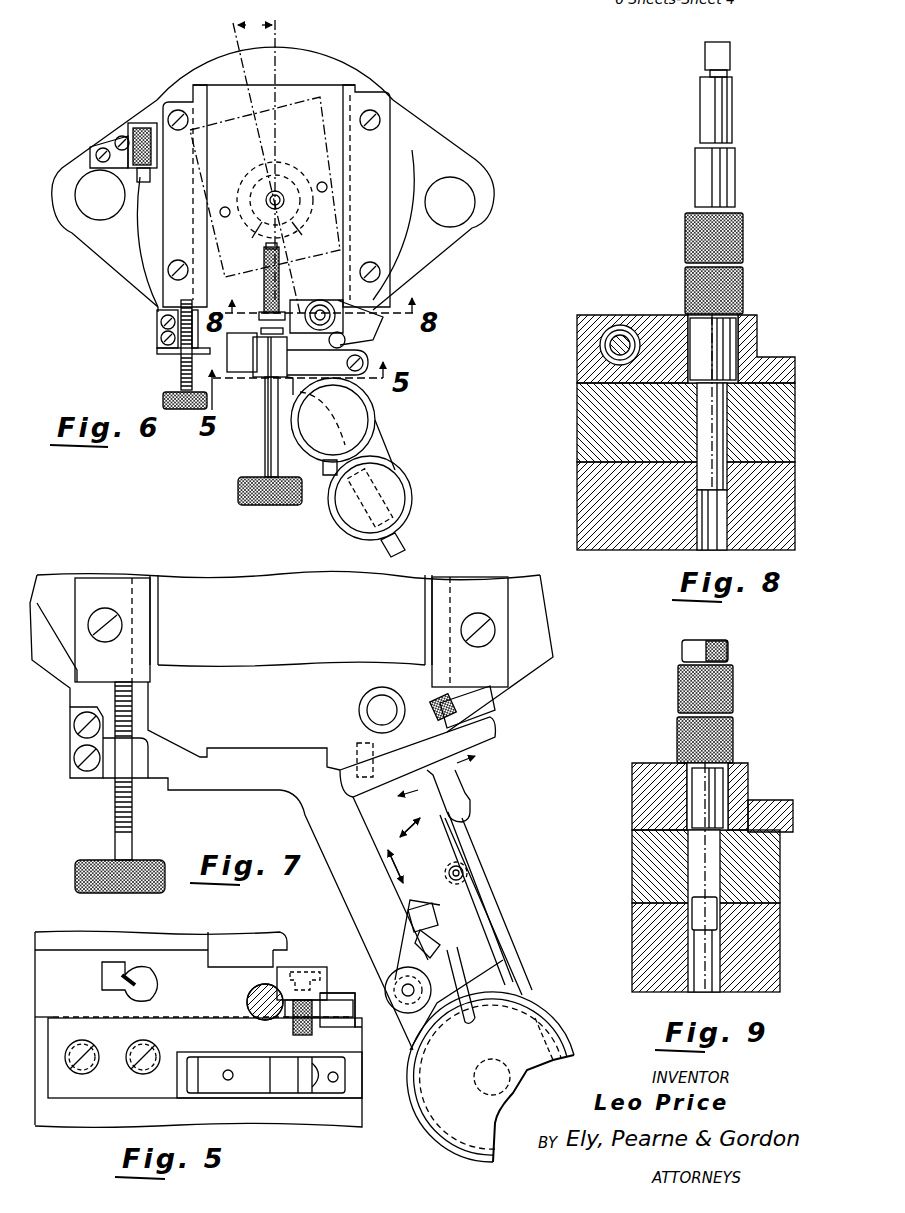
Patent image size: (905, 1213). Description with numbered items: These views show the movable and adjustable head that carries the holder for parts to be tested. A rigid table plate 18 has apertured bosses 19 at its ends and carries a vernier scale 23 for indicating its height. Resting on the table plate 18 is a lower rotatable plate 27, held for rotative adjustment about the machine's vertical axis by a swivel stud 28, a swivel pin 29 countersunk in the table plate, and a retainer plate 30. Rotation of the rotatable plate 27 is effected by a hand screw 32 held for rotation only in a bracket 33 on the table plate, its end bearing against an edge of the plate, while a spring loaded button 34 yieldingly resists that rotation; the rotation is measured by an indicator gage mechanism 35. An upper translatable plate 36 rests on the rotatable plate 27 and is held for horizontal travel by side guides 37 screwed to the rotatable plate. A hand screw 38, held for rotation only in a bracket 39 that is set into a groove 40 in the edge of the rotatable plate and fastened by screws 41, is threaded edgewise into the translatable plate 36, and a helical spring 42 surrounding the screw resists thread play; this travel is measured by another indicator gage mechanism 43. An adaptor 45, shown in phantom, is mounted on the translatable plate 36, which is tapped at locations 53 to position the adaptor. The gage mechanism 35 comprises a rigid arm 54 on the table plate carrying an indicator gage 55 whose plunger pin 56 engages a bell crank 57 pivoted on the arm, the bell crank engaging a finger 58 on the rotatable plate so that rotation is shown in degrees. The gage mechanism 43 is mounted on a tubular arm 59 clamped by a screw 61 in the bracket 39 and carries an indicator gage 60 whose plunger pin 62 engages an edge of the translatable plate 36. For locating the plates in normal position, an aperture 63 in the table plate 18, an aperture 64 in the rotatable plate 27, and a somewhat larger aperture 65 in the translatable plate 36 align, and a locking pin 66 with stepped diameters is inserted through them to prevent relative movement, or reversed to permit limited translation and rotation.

In FIG. 6, the table plate 18 is at (118, 258).
In FIG. 8, the table plate 18 is at (578, 478).
In FIG. 9, the table plate 18 is at (636, 950).
In FIG. 7, the table plate 18 is at (210, 775).
In FIG. 5, the table plate 18 is at (325, 1125).
In FIG. 6, the apertured bosses 19 is at (72, 165).
In FIG. 6, the vernier scale 23 is at (156, 351).
In FIG. 6, the rotatable plate 27 is at (152, 262).
In FIG. 8, the rotatable plate 27 is at (578, 420).
In FIG. 9, the rotatable plate 27 is at (635, 855).
In FIG. 7, the rotatable plate 27 is at (198, 680).
In FIG. 5, the rotatable plate 27 is at (353, 1095).
In FIG. 6, the swivel stud 28 is at (313, 235).
In FIG. 6, the swivel pin 29 is at (243, 239).
In FIG. 6, the retainer plate 30 is at (246, 184).
In FIG. 6, the hand screw 32 is at (180, 378).
In FIG. 7, the hand screw 32 is at (133, 812).
In FIG. 6, the bracket 33 is at (156, 333).
In FIG. 7, the bracket 33 is at (70, 765).
In FIG. 6, the spring loaded button 34 is at (132, 170).
In FIG. 6, the indicator gage mechanism 35 is at (330, 505).
In FIG. 7, the indicator gage mechanism 35 is at (512, 948).
In FIG. 6, the translatable plate 36 is at (332, 84).
In FIG. 8, the translatable plate 36 is at (582, 330).
In FIG. 9, the translatable plate 36 is at (652, 765).
In FIG. 7, the translatable plate 36 is at (212, 582).
In FIG. 5, the translatable plate 36 is at (280, 962).
In FIG. 6, the side guides 37 is at (185, 100).
In FIG. 8, the side guides 37 is at (790, 355).
In FIG. 9, the side guides 37 is at (775, 800).
In FIG. 7, the side guides 37 is at (102, 582).
In FIG. 5, the side guides 37 is at (350, 1012).
In FIG. 6, the hand screw 38 is at (265, 459).
In FIG. 8, the hand screw 38 is at (605, 350).
In FIG. 5, the hand screw 38 is at (118, 975).
In FIG. 6, the bracket 39 is at (254, 372).
In FIG. 5, the bracket 39 is at (212, 942).
In FIG. 7, the groove 40 is at (240, 752).
In FIG. 5, the screws 41 is at (140, 1072).
In FIG. 6, the helical spring 42 is at (262, 325).
In FIG. 8, the helical spring 42 is at (622, 325).
In FIG. 6, the indicator gage mechanism 43 is at (380, 403).
In FIG. 6, the adaptor 45 is at (303, 92).
In FIG. 6, the tapped locations 53 is at (322, 182).
In FIG. 6, the rigid arm 54 is at (385, 452).
In FIG. 7, the rigid arm 54 is at (322, 855).
In FIG. 6, the indicator gage 55 is at (412, 488).
In FIG. 7, the indicator gage 55 is at (540, 1018).
In FIG. 7, the plunger pin 56 is at (415, 940).
In FIG. 7, the bell crank 57 is at (460, 830).
In FIG. 7, the finger 58 is at (463, 783).
In FIG. 5, the finger 58 is at (300, 1090).
In FIG. 6, the tubular arm 59 is at (333, 420).
In FIG. 5, the tubular arm 59 is at (255, 1020).
In FIG. 6, the indicator gage 60 is at (377, 425).
In FIG. 6, the screw 61 is at (370, 358).
In FIG. 5, the screw 61 is at (325, 985).
In FIG. 6, the plunger pin 62 is at (346, 343).
In FIG. 5, the plunger pin 62 is at (247, 1000).
In FIG. 8, the aperture 63 is at (718, 545).
In FIG. 9, the aperture 63 is at (690, 992).
In FIG. 8, the aperture 64 is at (700, 447).
In FIG. 9, the aperture 64 is at (696, 868).
In FIG. 7, the aperture 64 is at (368, 712).
In FIG. 8, the aperture 65 is at (690, 360).
In FIG. 9, the aperture 65 is at (690, 812).
In FIG. 7, the aperture 65 is at (368, 722).
In FIG. 8, the locking pin 66 is at (700, 160).
In FIG. 9, the locking pin 66 is at (678, 680).